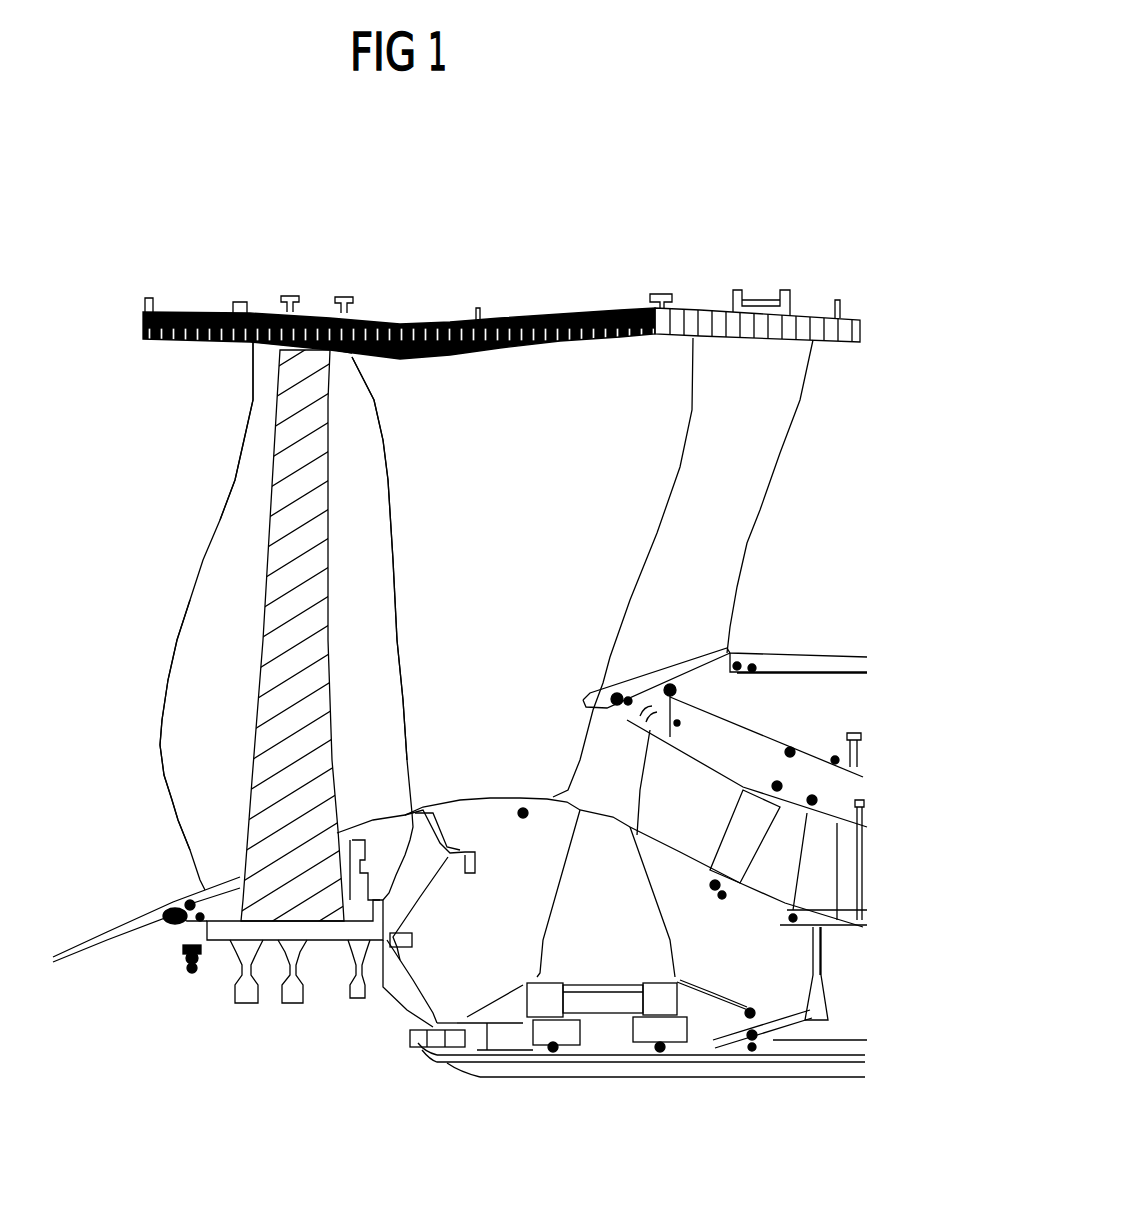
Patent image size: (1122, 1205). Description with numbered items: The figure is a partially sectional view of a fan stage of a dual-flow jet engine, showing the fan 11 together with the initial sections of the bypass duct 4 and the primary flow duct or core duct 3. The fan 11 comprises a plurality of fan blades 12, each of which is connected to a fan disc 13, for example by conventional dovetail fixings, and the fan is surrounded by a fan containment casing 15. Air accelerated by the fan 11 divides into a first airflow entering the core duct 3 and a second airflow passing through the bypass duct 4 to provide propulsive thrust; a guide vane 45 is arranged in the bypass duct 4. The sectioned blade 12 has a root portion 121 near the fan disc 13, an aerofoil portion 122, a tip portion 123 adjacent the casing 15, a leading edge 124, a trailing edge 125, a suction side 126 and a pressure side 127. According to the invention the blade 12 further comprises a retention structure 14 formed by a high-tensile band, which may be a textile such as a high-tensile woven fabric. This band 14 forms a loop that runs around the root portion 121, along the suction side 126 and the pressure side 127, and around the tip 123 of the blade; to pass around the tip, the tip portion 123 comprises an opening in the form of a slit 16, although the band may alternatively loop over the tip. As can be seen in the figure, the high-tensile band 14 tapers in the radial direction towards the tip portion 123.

The primary flow duct 3 is at (692, 813).
The bypass duct 4 is at (572, 507).
The fan 11 is at (212, 480).
The fan blade 12 is at (213, 590).
The fan disc 13 is at (237, 940).
The retention structure 14 is at (277, 687).
The fan containment casing 15 is at (320, 327).
The slit 16 is at (353, 364).
The guide vane 45 is at (757, 463).
The root portion 121 is at (385, 847).
The aerofoil portion 122 is at (175, 678).
The tip portion 123 is at (275, 368).
The leading edge 124 is at (160, 742).
The trailing edge 125 is at (397, 637).
The suction side 126 is at (382, 578).
The pressure side 127 is at (412, 515).